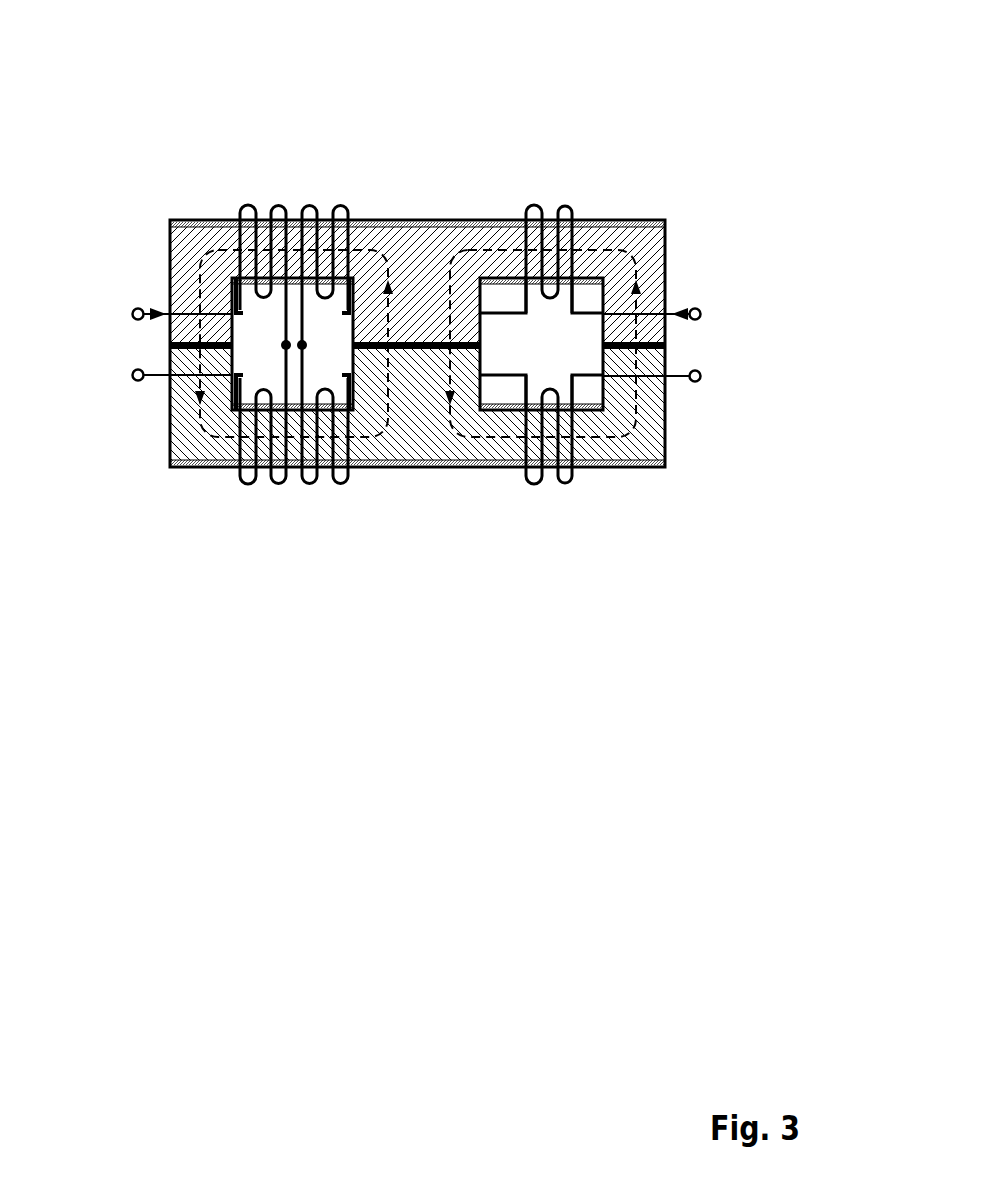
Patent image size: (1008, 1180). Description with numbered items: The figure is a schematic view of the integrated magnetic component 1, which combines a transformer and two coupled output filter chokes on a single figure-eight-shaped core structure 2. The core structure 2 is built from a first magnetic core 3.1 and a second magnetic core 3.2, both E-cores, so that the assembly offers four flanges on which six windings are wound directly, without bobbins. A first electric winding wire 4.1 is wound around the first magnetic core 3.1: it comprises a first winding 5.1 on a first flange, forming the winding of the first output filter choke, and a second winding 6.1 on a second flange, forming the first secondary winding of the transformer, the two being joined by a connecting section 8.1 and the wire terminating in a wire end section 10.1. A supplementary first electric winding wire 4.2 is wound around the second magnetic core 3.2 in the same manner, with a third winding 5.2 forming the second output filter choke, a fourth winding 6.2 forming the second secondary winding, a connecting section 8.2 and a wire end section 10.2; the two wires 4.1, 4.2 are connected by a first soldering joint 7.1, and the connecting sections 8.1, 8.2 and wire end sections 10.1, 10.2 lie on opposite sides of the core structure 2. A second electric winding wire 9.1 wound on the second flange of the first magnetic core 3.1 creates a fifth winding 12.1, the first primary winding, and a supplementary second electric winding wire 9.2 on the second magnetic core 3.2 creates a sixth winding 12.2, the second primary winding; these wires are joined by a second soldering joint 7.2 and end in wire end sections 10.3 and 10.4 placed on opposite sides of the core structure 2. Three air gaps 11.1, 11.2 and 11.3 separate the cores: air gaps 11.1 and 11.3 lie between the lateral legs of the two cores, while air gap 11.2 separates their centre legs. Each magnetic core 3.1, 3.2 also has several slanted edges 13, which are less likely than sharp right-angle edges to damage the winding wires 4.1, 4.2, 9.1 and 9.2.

The integrated magnetic component 1 is at (178, 556).
The 8-shaped core structure 2 is at (152, 461).
The first magnetic core 3.1 is at (397, 242).
The second magnetic core 3.2 is at (397, 440).
The first electric winding wire 4.1 is at (592, 312).
The supplementary first electric winding wire 4.2 is at (575, 377).
The first winding 5.1 is at (566, 207).
The third winding 5.2 is at (565, 484).
The second winding 6.1 is at (307, 207).
The fourth winding 6.2 is at (300, 487).
The first soldering joint 7.1 is at (304, 342).
The second soldering joint 7.2 is at (283, 343).
The connecting section 8.1 is at (442, 252).
The connecting section 8.2 is at (507, 378).
The second electric winding wire 9.1 is at (205, 312).
The supplementary second electric winding wire 9.2 is at (238, 425).
The wire end section 10.1 is at (676, 308).
The wire end section 10.2 is at (677, 382).
The wire end section 10.3 is at (157, 310).
The wire end section 10.4 is at (158, 378).
The air gap 11.1 is at (170, 341).
The air gap 11.2 is at (427, 352).
The air gap 11.3 is at (667, 343).
The fifth winding 12.1 is at (242, 207).
The sixth winding 12.2 is at (278, 485).
The slanted edges 13 is at (597, 221).